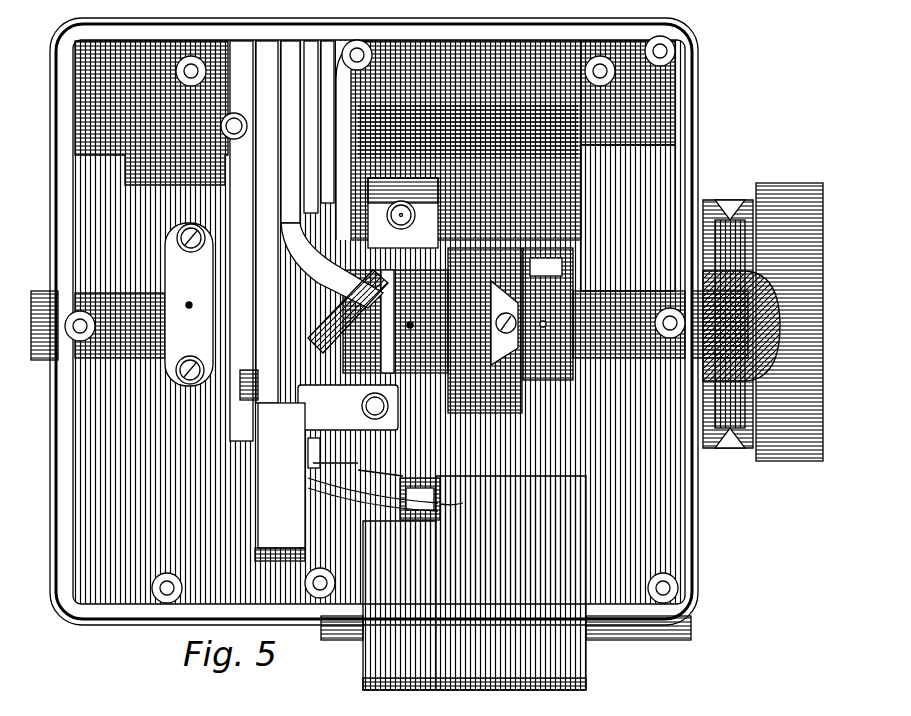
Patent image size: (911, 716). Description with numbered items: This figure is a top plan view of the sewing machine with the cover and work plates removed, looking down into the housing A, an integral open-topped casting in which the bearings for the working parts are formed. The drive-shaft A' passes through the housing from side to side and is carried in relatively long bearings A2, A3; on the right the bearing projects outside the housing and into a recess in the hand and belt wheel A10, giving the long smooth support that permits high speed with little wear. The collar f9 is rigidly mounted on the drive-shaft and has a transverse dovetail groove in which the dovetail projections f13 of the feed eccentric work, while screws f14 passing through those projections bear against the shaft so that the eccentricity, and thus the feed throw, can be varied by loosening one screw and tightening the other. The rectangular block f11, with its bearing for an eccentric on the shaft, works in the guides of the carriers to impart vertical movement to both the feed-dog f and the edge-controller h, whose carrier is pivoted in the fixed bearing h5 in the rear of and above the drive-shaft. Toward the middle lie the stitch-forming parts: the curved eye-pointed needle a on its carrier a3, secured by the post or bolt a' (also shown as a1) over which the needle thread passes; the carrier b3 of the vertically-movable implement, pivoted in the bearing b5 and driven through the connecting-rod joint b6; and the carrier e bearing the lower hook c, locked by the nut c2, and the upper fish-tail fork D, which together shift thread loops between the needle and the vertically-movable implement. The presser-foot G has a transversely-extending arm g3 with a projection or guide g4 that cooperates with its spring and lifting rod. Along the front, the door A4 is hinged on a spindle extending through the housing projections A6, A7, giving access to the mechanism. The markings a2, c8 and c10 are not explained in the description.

The housing A is at (388, 321).
The drive-shaft A' is at (736, 326).
The drive-shaft bearing A2 is at (629, 324).
The drive-shaft bearing A3 is at (98, 325).
The door A4 is at (474, 583).
The housing projection A6 is at (618, 632).
The housing projection A7 is at (338, 632).
The hand and belt wheel A10 is at (763, 309).
The fixed bearing h5 is at (151, 113).
The edge-controller h is at (237, 241).
The feed-dog f is at (267, 222).
The post or bolt a1 is at (326, 197).
The block a2 is at (450, 219).
The bearing b5 is at (468, 130).
The pivot connection b6 is at (395, 321).
The collar f9 is at (485, 330).
The rectangular block f11 is at (548, 311).
The dovetail projection f13 is at (504, 323).
The screw f14 is at (507, 315).
The screw c8 is at (196, 226).
The plate c10 is at (189, 304).
The transversely-extending arm g3 is at (348, 407).
The projection or guide g4 is at (367, 406).
The eye-pointed needle a is at (280, 482).
The post or bolt a' is at (251, 382).
The presser-foot G is at (285, 530).
The carrier b3 is at (313, 453).
The fork D is at (343, 459).
The needle carrier a3 is at (380, 467).
The carrier e is at (420, 499).
The hook c is at (410, 505).
The nut c2 is at (456, 509).